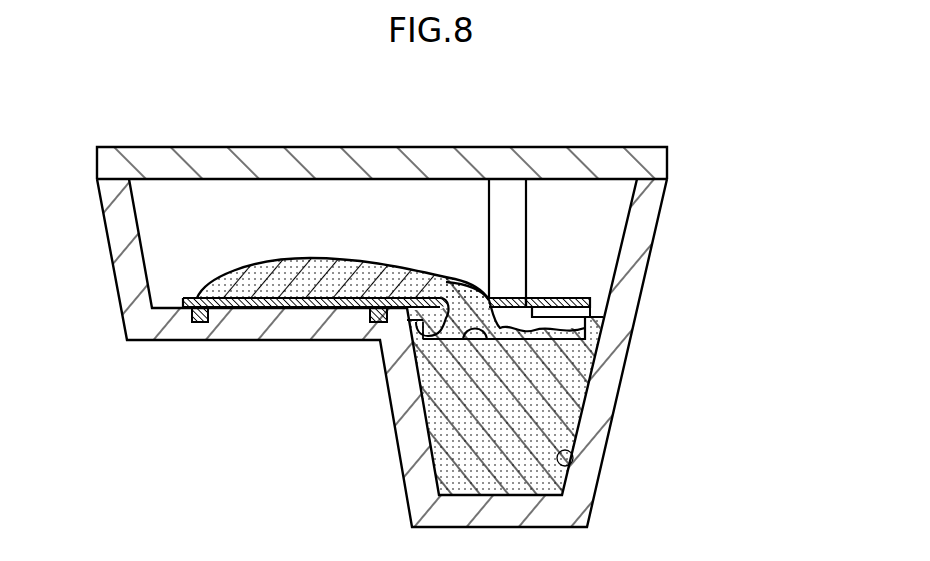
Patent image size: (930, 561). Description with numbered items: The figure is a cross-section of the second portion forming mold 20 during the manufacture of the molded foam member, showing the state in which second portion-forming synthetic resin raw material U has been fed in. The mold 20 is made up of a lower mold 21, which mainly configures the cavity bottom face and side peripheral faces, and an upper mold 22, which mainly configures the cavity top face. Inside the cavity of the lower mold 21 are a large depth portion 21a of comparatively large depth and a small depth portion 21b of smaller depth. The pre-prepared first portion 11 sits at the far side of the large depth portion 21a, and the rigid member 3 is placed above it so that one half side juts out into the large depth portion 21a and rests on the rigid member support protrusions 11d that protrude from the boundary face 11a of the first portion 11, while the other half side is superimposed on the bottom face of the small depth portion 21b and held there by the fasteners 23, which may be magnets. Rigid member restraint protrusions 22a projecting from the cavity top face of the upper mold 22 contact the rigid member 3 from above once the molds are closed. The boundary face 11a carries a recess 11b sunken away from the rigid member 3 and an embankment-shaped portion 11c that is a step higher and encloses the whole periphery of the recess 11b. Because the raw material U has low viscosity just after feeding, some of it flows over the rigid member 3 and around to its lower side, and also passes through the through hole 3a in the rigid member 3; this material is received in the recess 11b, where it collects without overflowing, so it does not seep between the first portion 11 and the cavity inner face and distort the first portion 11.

The second portion forming mold 20 is at (721, 143).
The lower mold 21 is at (113, 271).
The large depth portion 21a is at (573, 458).
The small depth portion 21b is at (211, 206).
The upper mold 22 is at (612, 147).
The rigid member restraint protrusion 22a is at (497, 207).
The fastener 23 is at (195, 323).
The rigid member 3 is at (312, 292).
The through hole 3a is at (445, 283).
The second portion-forming synthetic resin raw material U is at (282, 258).
The first portion 11 is at (565, 393).
The boundary face 11a is at (595, 309).
The recess 11b is at (487, 340).
The embankment-shaped portion 11c is at (433, 338).
The rigid member support protrusion 11d is at (500, 316).